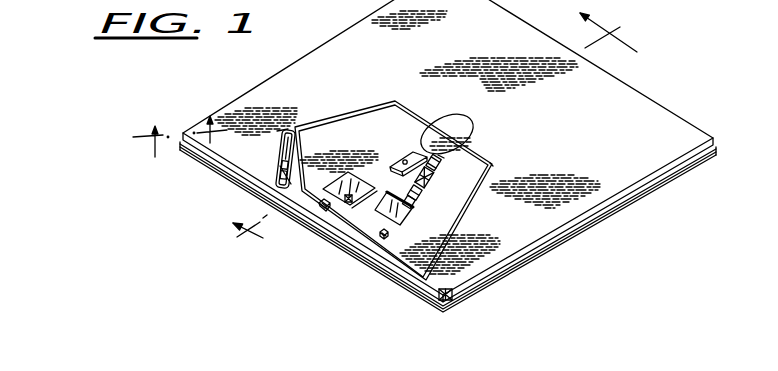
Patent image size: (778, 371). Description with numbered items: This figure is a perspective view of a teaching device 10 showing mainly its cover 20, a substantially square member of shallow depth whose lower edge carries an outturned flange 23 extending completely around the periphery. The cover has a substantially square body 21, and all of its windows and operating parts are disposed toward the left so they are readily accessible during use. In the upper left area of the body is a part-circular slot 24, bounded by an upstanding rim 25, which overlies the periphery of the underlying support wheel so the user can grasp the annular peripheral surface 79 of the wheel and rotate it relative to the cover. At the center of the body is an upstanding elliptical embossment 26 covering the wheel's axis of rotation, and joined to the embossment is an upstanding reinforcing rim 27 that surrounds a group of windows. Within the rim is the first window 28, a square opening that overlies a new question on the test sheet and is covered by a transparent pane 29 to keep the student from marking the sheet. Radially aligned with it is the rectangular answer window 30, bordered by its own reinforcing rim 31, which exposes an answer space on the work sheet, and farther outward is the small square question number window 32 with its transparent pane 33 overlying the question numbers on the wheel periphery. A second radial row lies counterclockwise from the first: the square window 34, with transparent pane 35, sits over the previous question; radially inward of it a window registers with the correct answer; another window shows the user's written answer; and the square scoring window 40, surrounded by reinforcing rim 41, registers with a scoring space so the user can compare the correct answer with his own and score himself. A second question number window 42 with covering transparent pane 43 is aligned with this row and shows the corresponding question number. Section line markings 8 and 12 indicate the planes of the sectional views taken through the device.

The section line 8- 8 is at (435, 134).
The teaching device 10 is at (450, 163).
The section line 12- 12 is at (185, 139).
The cover 20 is at (617, 173).
The body 21 is at (438, 75).
The outturned flange 23 is at (483, 292).
The part-circular slot 24 is at (284, 154).
The upstanding rim 25 is at (278, 140).
The elliptical embossment 26 is at (459, 117).
The reinforcing rim 27 is at (474, 196).
The first window 28 is at (347, 199).
The transparent pane 29 is at (357, 188).
The answer window 30 is at (404, 160).
The reinforcing rim 31 is at (389, 166).
The question number window 32 is at (320, 204).
The transparent pane 33 is at (325, 207).
The window 34 is at (397, 224).
The transparent pane 35 is at (410, 212).
The window 40 is at (444, 157).
The reinforcing rim 41 is at (489, 157).
The second question number window 42 is at (382, 238).
The transparent pane 43 is at (386, 241).
The annular peripheral surface 79 is at (281, 166).